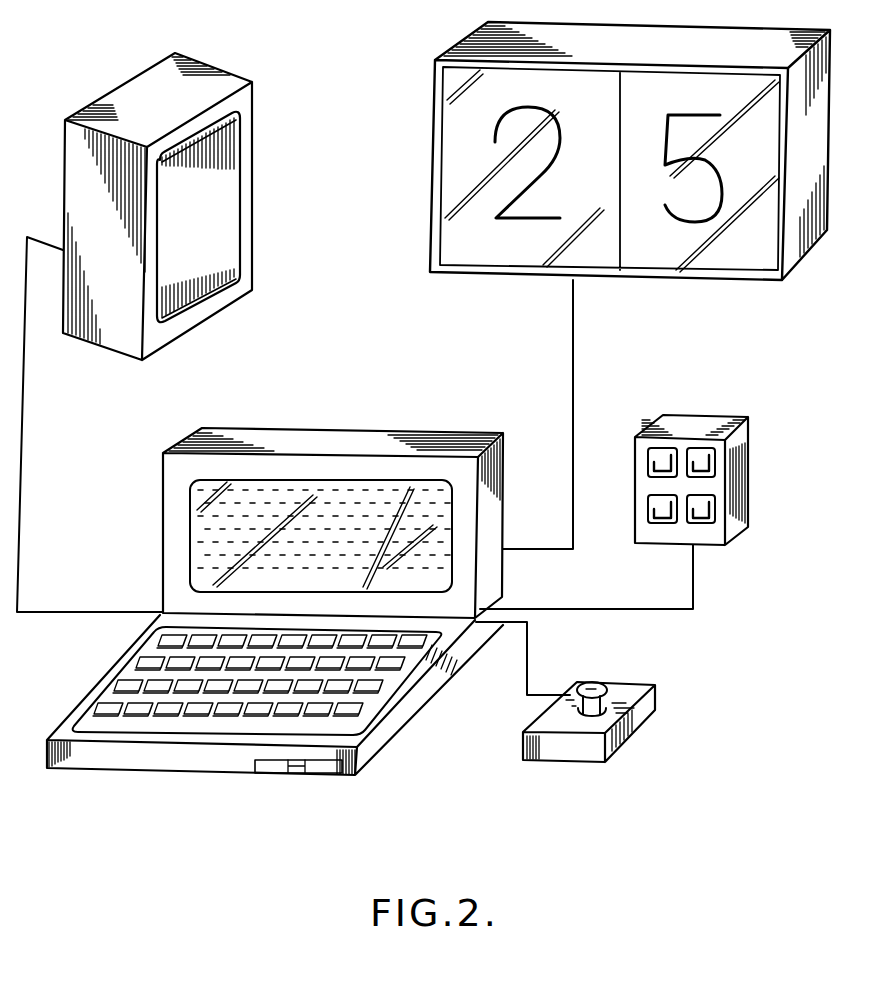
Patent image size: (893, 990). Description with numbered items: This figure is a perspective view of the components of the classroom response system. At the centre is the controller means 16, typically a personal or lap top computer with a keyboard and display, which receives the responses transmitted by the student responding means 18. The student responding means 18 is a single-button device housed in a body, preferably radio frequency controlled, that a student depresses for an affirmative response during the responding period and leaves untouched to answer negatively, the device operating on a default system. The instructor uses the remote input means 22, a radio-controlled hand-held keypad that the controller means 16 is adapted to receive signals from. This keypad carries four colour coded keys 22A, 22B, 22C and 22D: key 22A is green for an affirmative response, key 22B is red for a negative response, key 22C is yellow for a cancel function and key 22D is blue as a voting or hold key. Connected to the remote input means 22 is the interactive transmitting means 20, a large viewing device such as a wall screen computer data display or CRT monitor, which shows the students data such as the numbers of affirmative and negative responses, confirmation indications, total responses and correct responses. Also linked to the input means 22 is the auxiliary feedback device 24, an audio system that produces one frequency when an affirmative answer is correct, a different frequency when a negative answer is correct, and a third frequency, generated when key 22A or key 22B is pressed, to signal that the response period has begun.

The controller means 16 is at (388, 730).
The student responding means 18 is at (622, 692).
The transmitting means 20 is at (708, 288).
The remote input means 22 is at (736, 478).
The key 22A is at (661, 458).
The key 22B is at (703, 460).
The key 22C is at (660, 510).
The key 22D is at (700, 513).
The auxiliary feedback device 24 is at (213, 303).